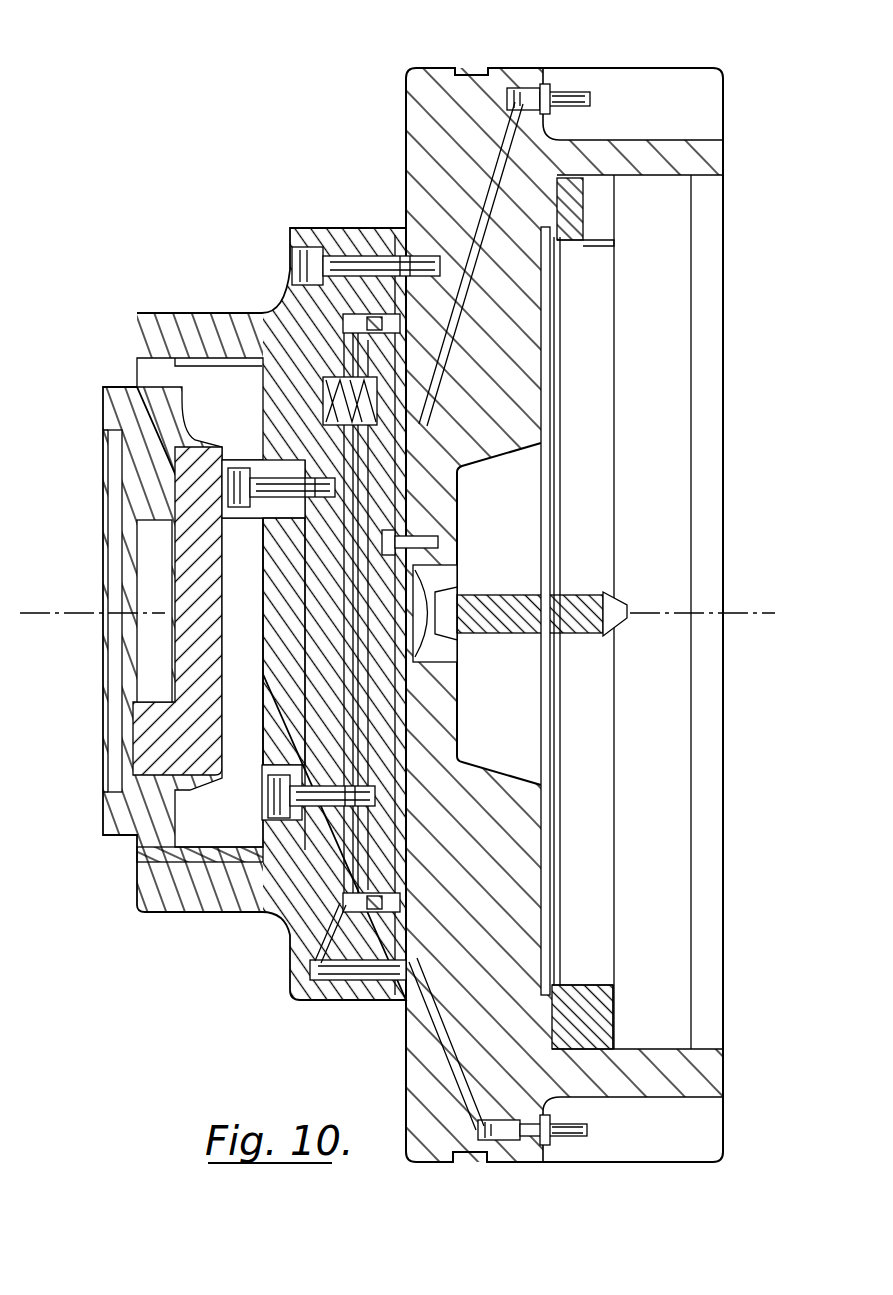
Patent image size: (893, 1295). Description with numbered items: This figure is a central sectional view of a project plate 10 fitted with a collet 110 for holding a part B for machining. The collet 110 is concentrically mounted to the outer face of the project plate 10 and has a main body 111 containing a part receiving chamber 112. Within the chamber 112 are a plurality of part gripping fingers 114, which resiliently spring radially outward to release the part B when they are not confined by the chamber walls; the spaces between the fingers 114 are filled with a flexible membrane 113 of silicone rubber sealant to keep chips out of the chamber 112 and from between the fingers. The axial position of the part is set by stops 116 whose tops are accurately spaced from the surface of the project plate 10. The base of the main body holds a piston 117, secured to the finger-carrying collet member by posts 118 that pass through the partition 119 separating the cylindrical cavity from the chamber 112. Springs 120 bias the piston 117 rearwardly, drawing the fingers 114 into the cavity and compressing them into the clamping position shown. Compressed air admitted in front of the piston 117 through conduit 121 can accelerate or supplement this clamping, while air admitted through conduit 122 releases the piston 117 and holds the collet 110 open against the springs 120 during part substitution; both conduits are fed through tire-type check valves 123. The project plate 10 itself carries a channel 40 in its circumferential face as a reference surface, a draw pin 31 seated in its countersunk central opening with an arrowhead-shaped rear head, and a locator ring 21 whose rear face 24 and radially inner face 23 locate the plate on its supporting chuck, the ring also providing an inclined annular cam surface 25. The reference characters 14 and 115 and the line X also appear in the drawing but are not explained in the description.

The project plate 10 is at (400, 135).
The cover plate 14 is at (665, 85).
The channel 40 is at (470, 70).
The check valve 123 is at (560, 98).
The conduit 122 is at (505, 135).
The collet 110 is at (126, 853).
The part B is at (113, 385).
The part gripping finger 114 is at (165, 360).
The part receiving chamber 112 is at (237, 830).
The flexible membrane 113 is at (140, 865).
The stop 116 is at (425, 258).
The piston 117 is at (358, 323).
The spring 120 is at (335, 388).
The bolt 115 is at (237, 460).
The axis X is at (55, 610).
The partition 119 is at (318, 542).
The main body 111 is at (262, 653).
The post 118 is at (290, 766).
The conduit 121 is at (318, 1000).
The draw pin 31 is at (510, 590).
The annular cam surface 25 is at (565, 903).
The locator ring 21 is at (575, 210).
The radially inner face 23 is at (580, 252).
The rear face 24 is at (622, 1012).